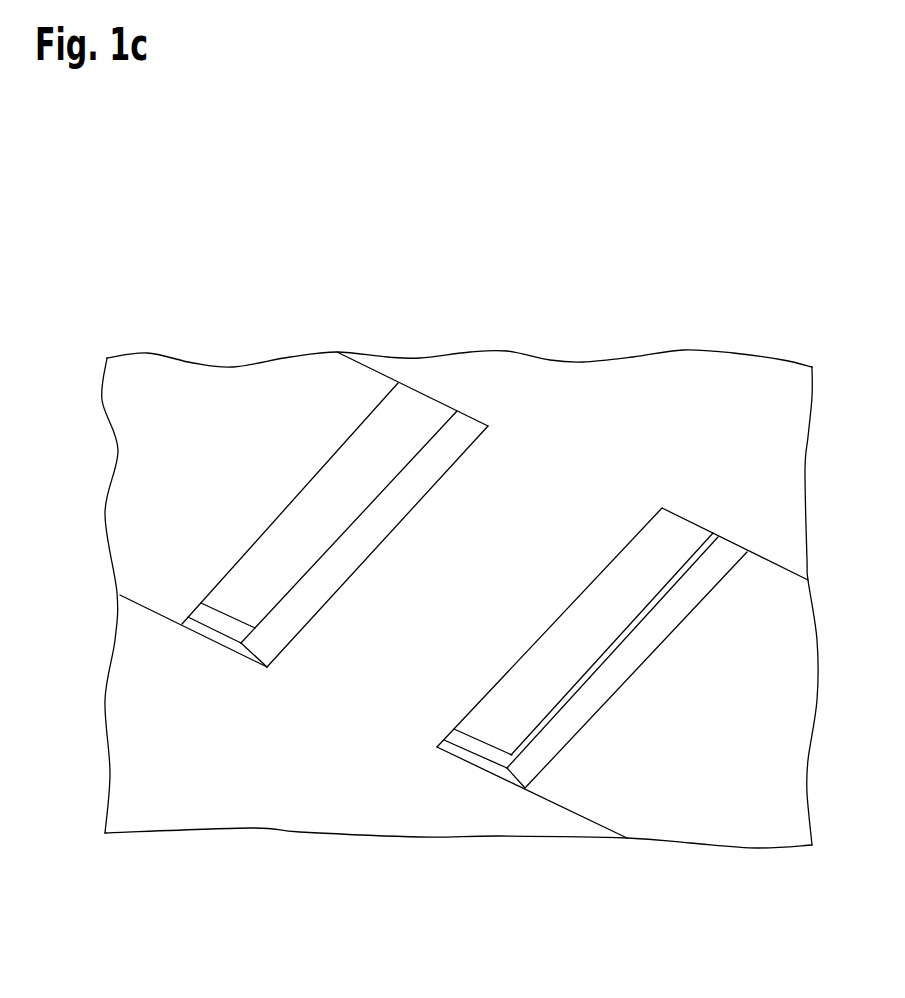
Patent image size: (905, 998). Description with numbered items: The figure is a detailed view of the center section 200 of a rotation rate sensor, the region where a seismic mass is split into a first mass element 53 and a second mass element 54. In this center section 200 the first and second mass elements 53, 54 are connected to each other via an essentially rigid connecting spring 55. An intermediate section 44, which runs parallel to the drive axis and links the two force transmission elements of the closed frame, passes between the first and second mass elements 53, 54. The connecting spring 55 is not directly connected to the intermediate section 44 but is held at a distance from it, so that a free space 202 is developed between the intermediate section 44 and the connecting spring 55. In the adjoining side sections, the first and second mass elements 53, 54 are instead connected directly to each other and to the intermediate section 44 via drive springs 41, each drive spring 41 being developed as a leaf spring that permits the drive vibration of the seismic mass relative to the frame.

The center section 200 is at (632, 226).
The drive spring 41 is at (200, 410).
The intermediate section 44 is at (357, 472).
The free space 202 is at (294, 581).
The first mass element 53 is at (667, 407).
The second mass element 54 is at (192, 767).
The connecting spring 55 is at (439, 611).